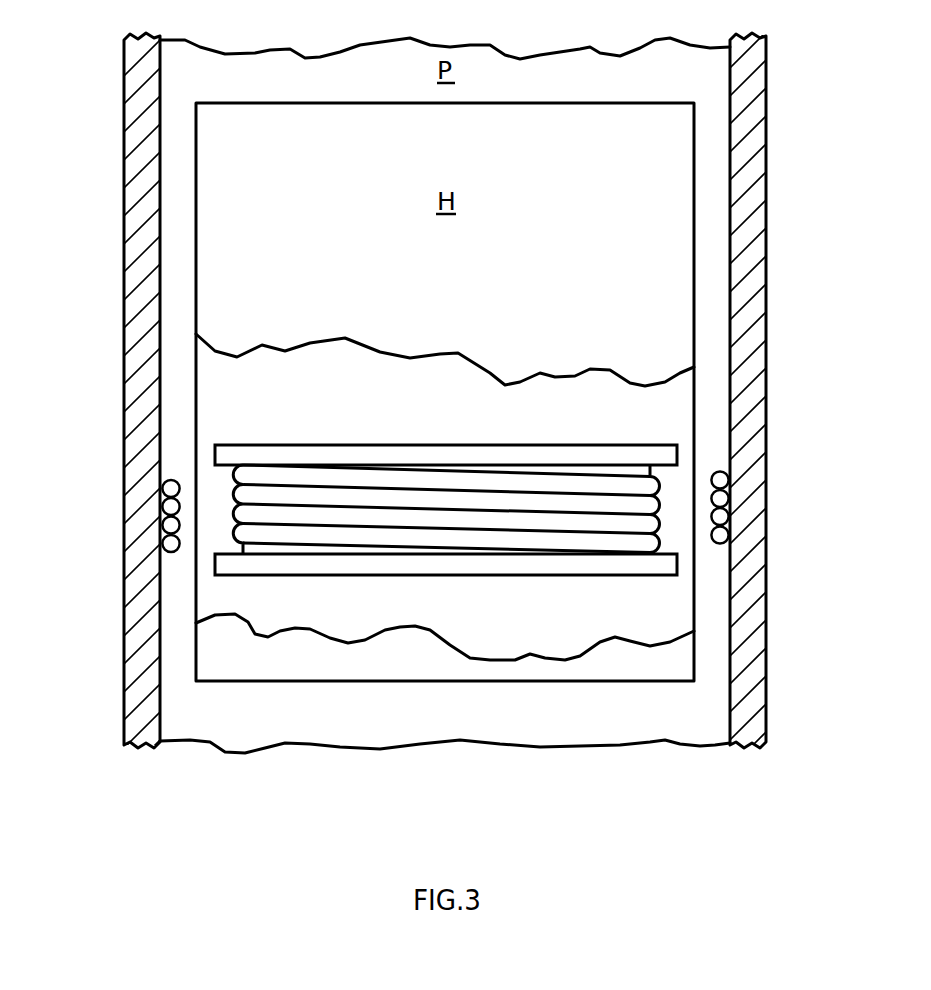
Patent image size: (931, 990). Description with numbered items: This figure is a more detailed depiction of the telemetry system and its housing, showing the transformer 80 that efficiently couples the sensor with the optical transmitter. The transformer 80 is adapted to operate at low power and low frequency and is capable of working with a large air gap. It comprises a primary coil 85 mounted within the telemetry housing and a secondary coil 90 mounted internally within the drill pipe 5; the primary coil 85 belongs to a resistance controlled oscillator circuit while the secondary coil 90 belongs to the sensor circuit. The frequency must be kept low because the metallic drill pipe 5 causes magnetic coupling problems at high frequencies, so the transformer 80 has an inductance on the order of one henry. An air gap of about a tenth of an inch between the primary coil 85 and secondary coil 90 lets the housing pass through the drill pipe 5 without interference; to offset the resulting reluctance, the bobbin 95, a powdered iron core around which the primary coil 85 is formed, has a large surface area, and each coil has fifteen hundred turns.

The drill pipe 5 is at (124, 130).
The transformer 80 is at (461, 580).
The primary coil 85 is at (661, 500).
The secondary coil 90 is at (370, 455).
The bobbin 95 is at (607, 445).